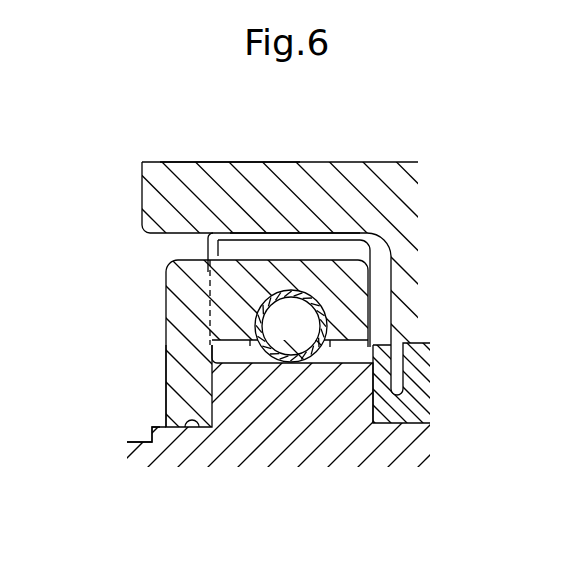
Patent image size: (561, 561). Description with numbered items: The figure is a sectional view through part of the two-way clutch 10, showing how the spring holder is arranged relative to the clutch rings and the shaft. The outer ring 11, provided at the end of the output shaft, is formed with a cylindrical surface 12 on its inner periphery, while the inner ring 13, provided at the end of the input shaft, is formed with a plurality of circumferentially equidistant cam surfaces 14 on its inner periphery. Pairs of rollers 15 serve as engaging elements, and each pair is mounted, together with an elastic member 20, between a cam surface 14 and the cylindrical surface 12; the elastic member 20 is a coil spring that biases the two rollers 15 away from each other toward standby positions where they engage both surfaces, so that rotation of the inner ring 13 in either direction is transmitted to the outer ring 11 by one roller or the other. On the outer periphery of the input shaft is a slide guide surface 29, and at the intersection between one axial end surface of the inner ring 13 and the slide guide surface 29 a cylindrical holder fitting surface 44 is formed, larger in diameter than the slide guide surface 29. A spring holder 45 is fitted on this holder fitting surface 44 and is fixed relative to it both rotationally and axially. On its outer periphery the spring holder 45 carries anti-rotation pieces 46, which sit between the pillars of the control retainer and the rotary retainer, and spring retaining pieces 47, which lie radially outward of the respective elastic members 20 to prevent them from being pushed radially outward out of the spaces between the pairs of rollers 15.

The two-way clutch 10 is at (183, 158).
The outer ring 11 is at (242, 172).
The cylindrical surface 12 is at (295, 240).
The inner ring 13 is at (290, 400).
The cam surface 14 is at (352, 360).
The roller 15 is at (330, 243).
The elastic member 20 is at (322, 312).
The slide guide surface 29 is at (140, 442).
The holder fitting surface 44 is at (188, 428).
The spring holder 45 is at (175, 345).
The anti-rotation piece 46 is at (180, 288).
The spring retaining piece 47 is at (357, 327).